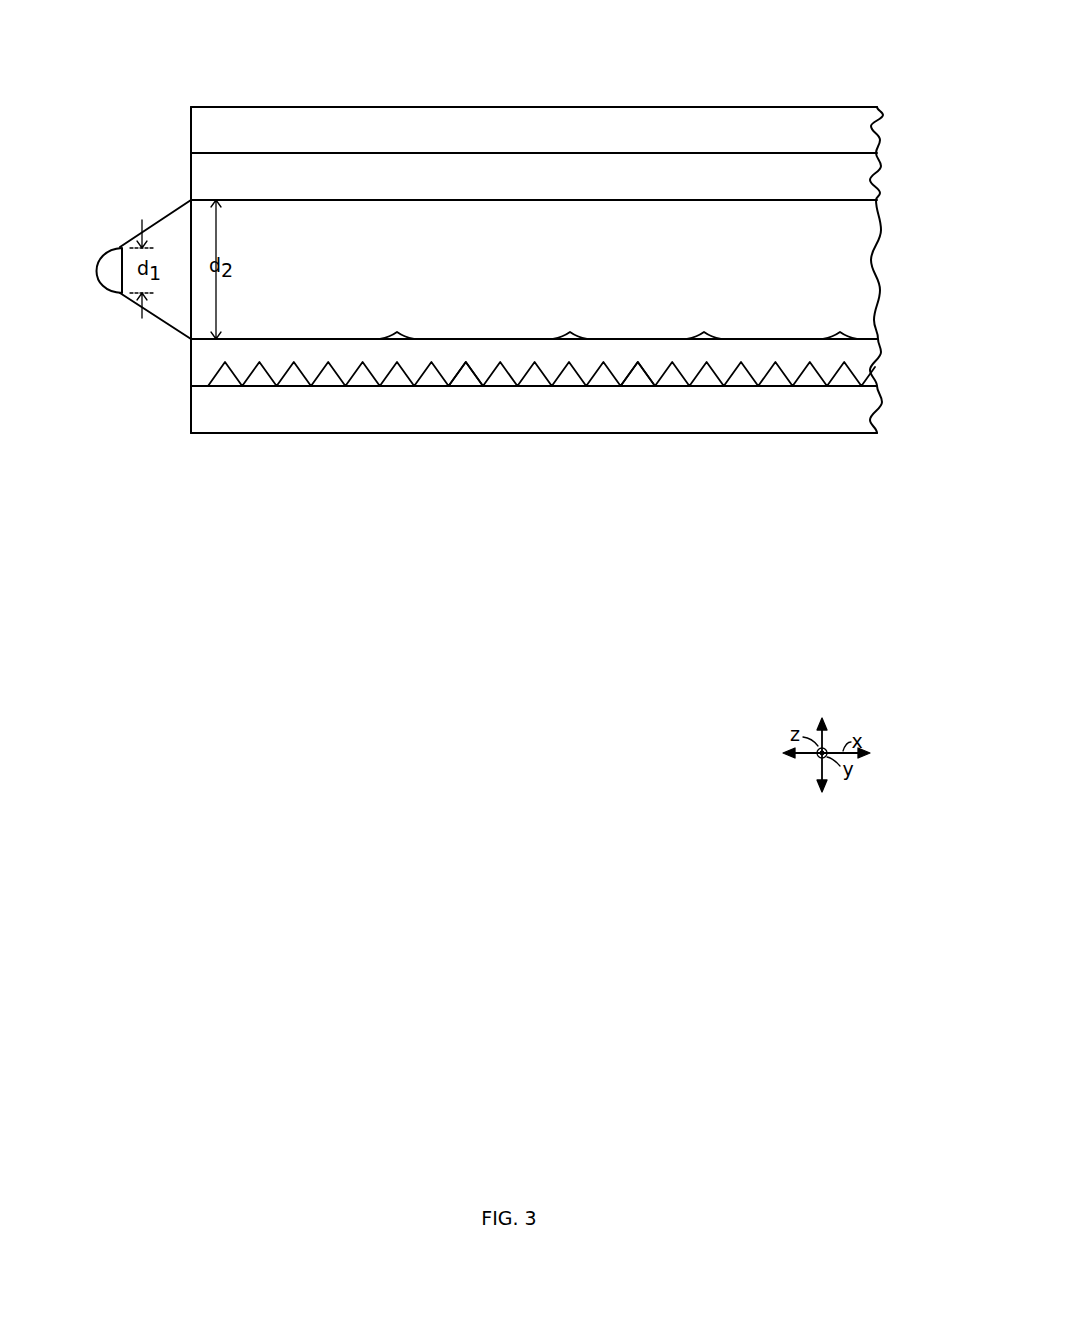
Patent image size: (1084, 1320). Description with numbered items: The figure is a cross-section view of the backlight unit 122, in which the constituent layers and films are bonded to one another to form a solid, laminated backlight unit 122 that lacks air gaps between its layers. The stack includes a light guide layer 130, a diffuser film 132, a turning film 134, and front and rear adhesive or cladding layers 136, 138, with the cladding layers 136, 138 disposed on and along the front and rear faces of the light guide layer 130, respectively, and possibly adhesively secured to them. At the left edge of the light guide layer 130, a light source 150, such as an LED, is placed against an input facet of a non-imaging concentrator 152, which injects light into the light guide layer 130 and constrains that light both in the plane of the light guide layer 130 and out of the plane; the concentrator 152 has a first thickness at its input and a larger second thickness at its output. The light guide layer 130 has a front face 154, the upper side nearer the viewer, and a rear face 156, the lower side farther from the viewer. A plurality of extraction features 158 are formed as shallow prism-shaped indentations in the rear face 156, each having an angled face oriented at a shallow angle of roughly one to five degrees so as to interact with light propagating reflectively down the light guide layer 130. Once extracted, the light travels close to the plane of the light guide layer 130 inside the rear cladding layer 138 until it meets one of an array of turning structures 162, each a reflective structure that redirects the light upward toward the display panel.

The backlight unit 122 is at (758, 55).
The light guide layer 130 is at (510, 256).
The diffuser film 132 is at (510, 140).
The turning film 134 is at (510, 418).
The front cladding layer 136 is at (510, 185).
The rear cladding layer 138 is at (198, 355).
The light source 150 is at (108, 251).
The non-imaging concentrator 152 is at (152, 226).
The front face 154 is at (272, 200).
The rear face 156 is at (268, 342).
The extraction features 158 is at (398, 331).
The turning structures 162 is at (457, 368).